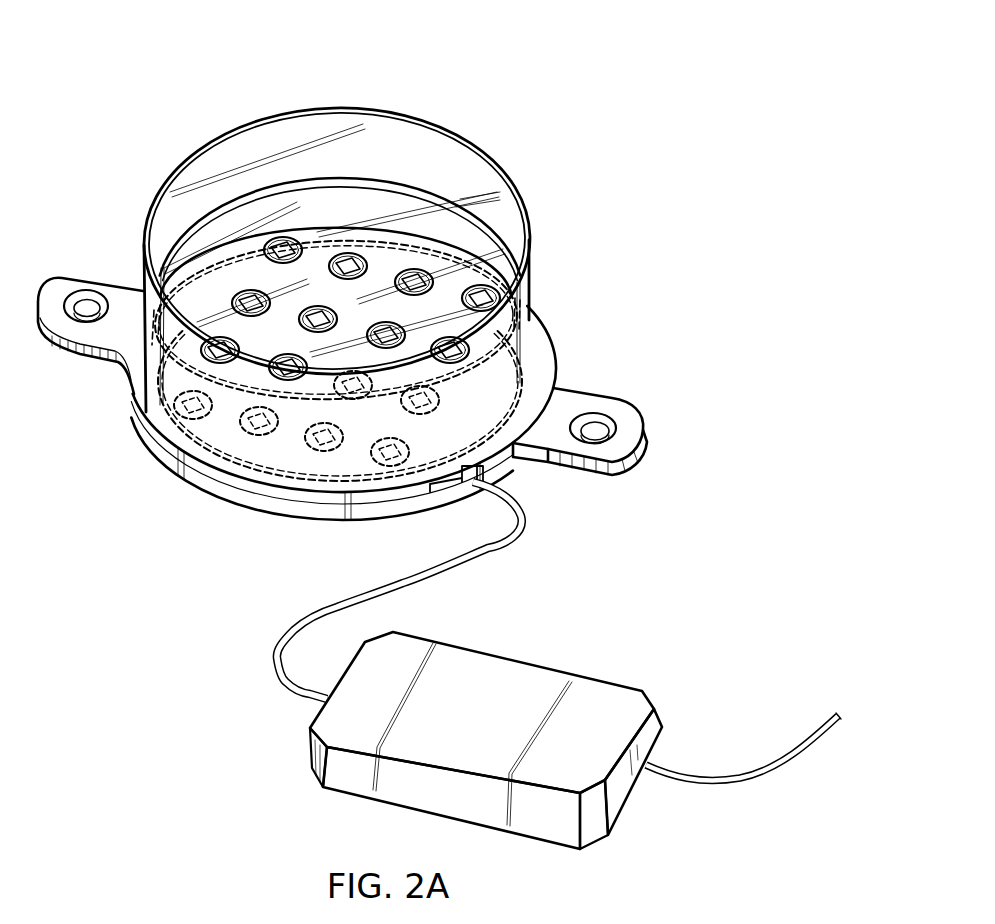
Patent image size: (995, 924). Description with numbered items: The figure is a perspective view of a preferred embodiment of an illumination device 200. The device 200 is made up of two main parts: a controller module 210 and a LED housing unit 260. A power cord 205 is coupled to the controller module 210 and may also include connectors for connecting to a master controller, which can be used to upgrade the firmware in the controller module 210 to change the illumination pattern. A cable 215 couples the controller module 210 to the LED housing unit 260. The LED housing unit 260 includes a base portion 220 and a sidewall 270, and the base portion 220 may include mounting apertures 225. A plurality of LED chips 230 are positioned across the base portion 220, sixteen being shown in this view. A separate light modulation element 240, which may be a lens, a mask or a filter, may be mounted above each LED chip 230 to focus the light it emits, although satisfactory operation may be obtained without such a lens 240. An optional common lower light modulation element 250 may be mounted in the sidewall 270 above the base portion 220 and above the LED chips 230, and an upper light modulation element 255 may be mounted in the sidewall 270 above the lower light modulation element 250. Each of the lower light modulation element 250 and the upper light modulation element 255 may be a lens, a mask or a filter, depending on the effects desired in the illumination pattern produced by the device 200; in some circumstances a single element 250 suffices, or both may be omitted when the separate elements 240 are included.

The illumination device 200 is at (439, 432).
The power cord 205 is at (720, 781).
The controller module 210 is at (557, 667).
The cable 215 is at (310, 622).
The base portion 220 is at (177, 478).
The mounting apertures 225 is at (86, 295).
The LED chips 230 is at (292, 237).
The light modulation element 240 is at (324, 272).
The lower light modulation element 250 is at (435, 190).
The upper light modulation element 255 is at (450, 133).
The LED housing unit 260 is at (344, 213).
The sidewall 270 is at (530, 283).